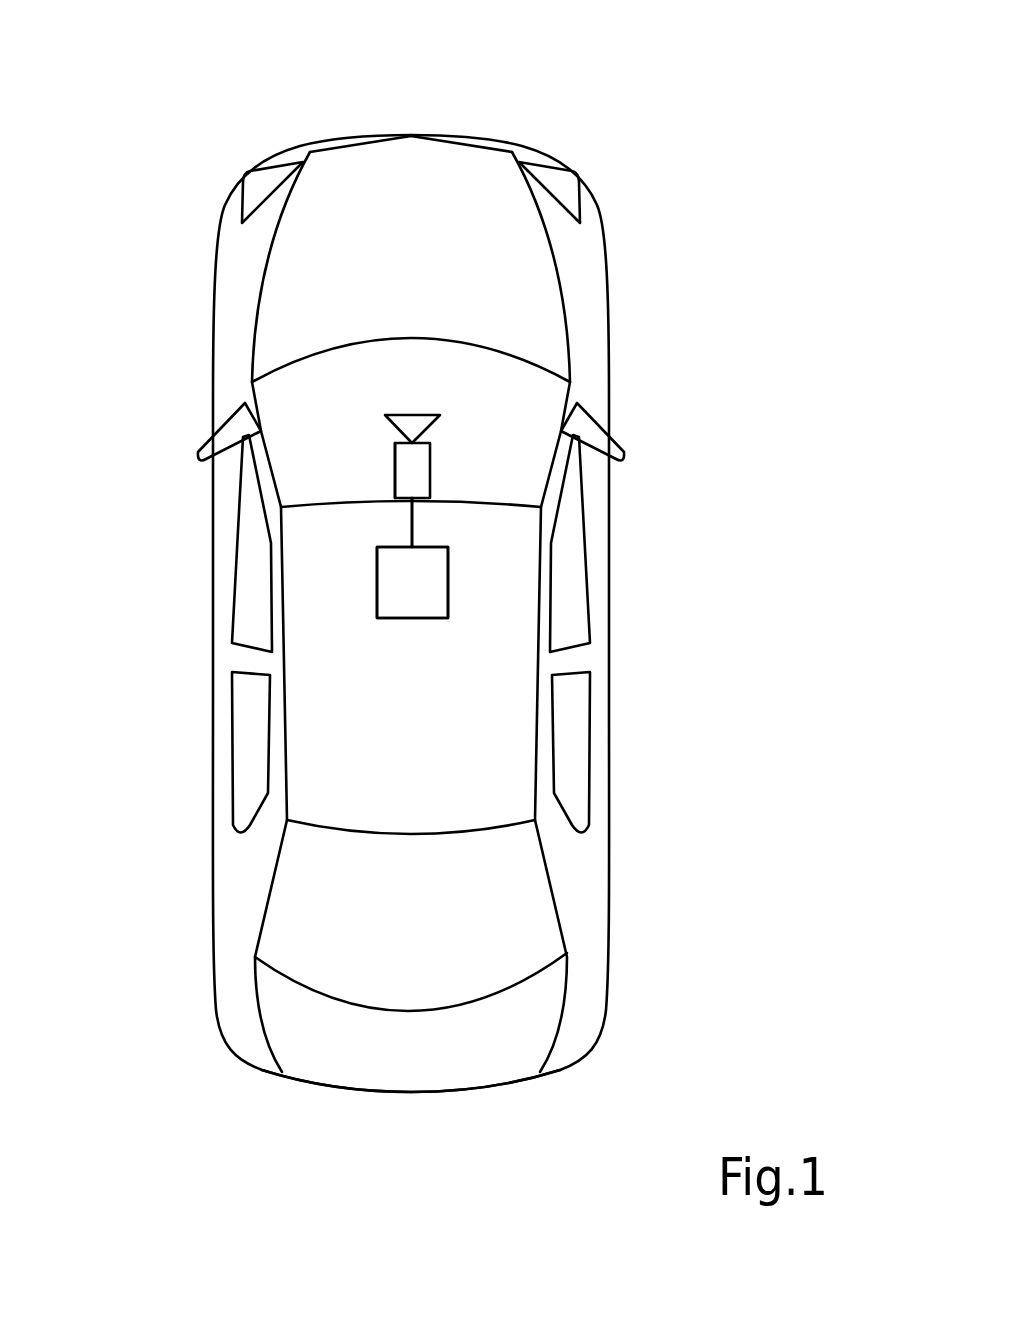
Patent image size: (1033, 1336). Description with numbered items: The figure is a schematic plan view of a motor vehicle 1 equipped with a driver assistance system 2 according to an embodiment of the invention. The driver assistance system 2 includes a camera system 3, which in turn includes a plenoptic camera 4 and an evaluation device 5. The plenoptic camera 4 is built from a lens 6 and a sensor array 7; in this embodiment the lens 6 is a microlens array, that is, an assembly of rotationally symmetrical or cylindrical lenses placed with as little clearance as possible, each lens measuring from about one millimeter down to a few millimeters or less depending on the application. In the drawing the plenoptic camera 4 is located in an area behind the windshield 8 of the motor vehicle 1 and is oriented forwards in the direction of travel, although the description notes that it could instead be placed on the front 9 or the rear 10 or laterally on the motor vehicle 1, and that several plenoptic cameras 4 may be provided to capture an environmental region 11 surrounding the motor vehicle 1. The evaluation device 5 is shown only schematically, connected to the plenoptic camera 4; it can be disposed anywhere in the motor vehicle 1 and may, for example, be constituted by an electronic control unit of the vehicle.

The motor vehicle 1 is at (622, 248).
The driver assistance system 2 is at (463, 557).
The camera system 3 is at (443, 520).
The plenoptic camera 4 is at (423, 470).
The evaluation device 5 is at (413, 605).
The lens 6 is at (433, 433).
The sensor array 7 is at (392, 450).
The windshield 8 is at (280, 310).
The front 9 is at (427, 122).
The rear 10 is at (380, 1100).
The environmental region 11 is at (392, 83).